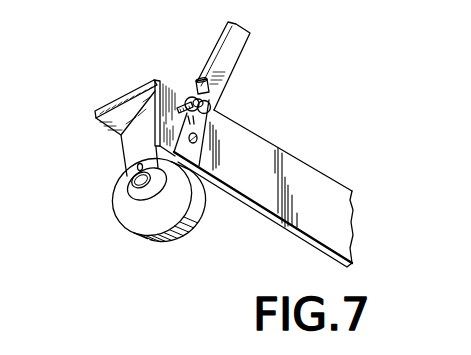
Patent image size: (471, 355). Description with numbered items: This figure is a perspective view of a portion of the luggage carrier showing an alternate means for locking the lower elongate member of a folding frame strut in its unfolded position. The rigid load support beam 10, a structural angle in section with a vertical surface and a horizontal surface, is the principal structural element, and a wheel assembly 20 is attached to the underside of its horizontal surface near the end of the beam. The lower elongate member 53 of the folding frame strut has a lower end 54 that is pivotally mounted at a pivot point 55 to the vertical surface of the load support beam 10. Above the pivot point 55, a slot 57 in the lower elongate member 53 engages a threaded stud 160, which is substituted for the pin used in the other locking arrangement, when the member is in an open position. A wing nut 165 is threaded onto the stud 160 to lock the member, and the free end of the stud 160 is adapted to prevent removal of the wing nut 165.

The load support beam 10 is at (128, 87).
The wheel assembly 20 is at (119, 216).
The lower elongate member 53 is at (232, 56).
The lower end 54 is at (194, 173).
The pivot point 55 is at (198, 138).
The slot 57 is at (185, 128).
The stud 160 is at (190, 97).
The wing nut 165 is at (215, 110).